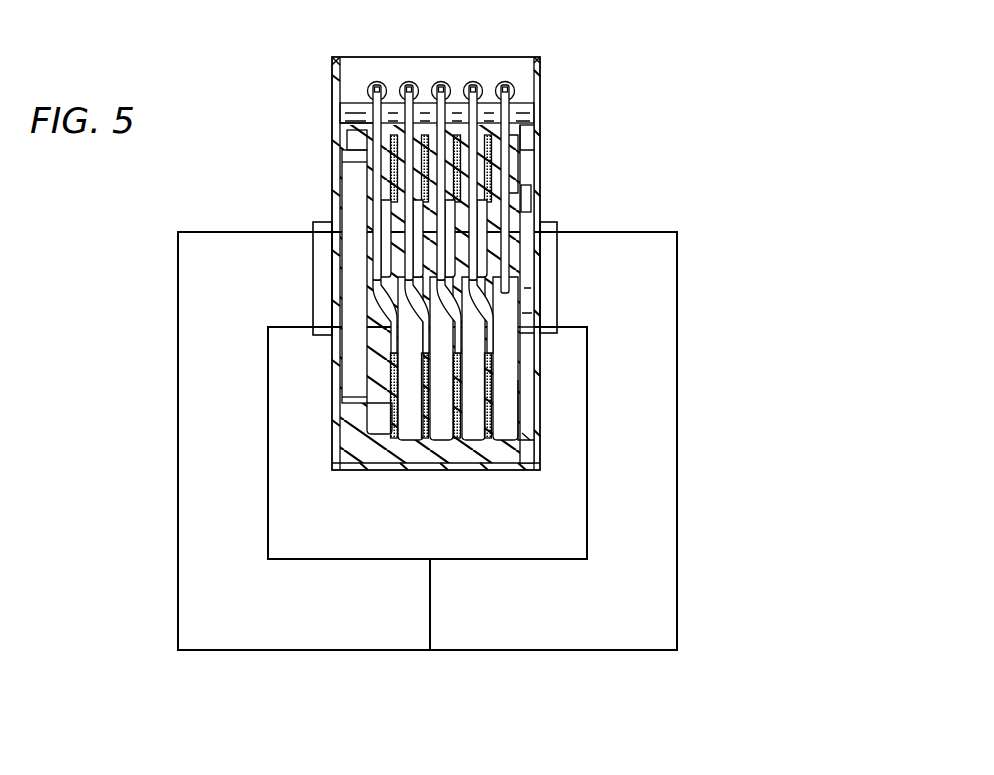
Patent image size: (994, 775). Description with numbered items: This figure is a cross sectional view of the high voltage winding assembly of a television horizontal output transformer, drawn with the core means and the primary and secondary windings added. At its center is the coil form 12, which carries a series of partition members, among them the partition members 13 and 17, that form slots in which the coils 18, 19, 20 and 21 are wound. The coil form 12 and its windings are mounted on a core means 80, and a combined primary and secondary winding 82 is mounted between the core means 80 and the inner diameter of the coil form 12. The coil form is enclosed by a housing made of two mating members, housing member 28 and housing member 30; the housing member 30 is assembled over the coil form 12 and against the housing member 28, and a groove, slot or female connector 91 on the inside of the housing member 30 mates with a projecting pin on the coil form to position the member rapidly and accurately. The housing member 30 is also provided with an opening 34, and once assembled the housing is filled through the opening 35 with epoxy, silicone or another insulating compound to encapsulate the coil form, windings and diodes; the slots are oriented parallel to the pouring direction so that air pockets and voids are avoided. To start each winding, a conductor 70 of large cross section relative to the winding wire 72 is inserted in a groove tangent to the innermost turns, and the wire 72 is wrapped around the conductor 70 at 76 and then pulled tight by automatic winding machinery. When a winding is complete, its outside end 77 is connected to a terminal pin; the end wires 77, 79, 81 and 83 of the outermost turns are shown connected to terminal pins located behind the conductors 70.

The coil form 12 is at (522, 150).
The partition member 13 is at (520, 392).
The partition member 17 is at (378, 442).
The coil 18 is at (492, 442).
The coil 19 is at (458, 442).
The coil 20 is at (426, 443).
The coil 21 is at (397, 442).
The housing member 28 is at (332, 160).
The housing member 30 is at (540, 162).
The opening 34 is at (538, 106).
The opening 35 is at (532, 63).
The conductor 70 is at (336, 122).
The wire 72 is at (370, 200).
The wrap point 76 is at (468, 106).
The outside end wire 77 is at (492, 116).
The end wire 79 is at (462, 122).
The core means 80 is at (647, 232).
The end wire 81 is at (430, 122).
The combined primary and secondary winding 82 is at (558, 223).
The end wire 83 is at (400, 128).
The female connector 91 is at (537, 182).